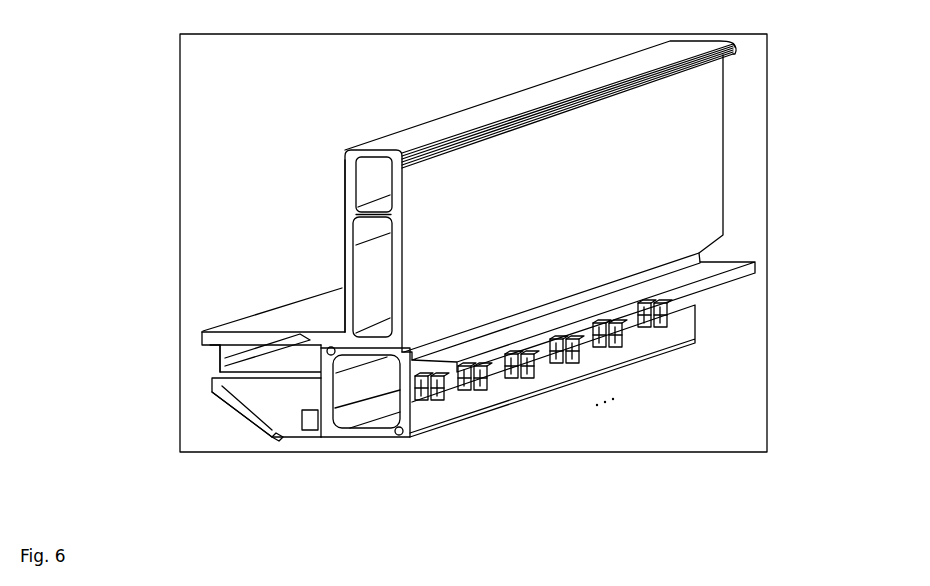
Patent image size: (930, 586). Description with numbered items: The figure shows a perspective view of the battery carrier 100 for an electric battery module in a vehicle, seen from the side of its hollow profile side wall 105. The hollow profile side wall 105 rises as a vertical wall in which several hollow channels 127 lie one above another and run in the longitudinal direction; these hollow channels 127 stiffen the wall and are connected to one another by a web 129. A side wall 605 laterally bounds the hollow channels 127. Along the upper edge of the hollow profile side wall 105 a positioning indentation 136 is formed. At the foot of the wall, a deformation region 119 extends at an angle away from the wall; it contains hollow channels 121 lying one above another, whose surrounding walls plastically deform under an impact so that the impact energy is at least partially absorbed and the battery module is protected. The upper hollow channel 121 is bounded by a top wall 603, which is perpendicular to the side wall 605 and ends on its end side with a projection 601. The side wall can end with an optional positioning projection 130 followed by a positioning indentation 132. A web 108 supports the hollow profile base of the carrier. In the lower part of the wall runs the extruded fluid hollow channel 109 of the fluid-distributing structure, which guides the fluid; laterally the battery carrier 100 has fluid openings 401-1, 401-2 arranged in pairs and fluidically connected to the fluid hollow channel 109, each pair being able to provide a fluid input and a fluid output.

The battery carrier 100 is at (180, 146).
The hollow profile side wall 105 is at (360, 128).
The positioning indentation 136 is at (710, 63).
The hollow channels 127 is at (368, 180).
The web 129 is at (352, 213).
The side wall 605 is at (343, 220).
The top wall 603 is at (317, 307).
The deformation region 119 is at (258, 325).
The projection 601 is at (203, 336).
The hollow channels 121 is at (227, 353).
The positioning projection 130 is at (272, 438).
The positioning indentation 132 is at (280, 439).
The fluid hollow channel 109 is at (405, 372).
The fluid opening 401-1 is at (413, 403).
The fluid opening 401-2 is at (440, 397).
The web 108 is at (727, 285).